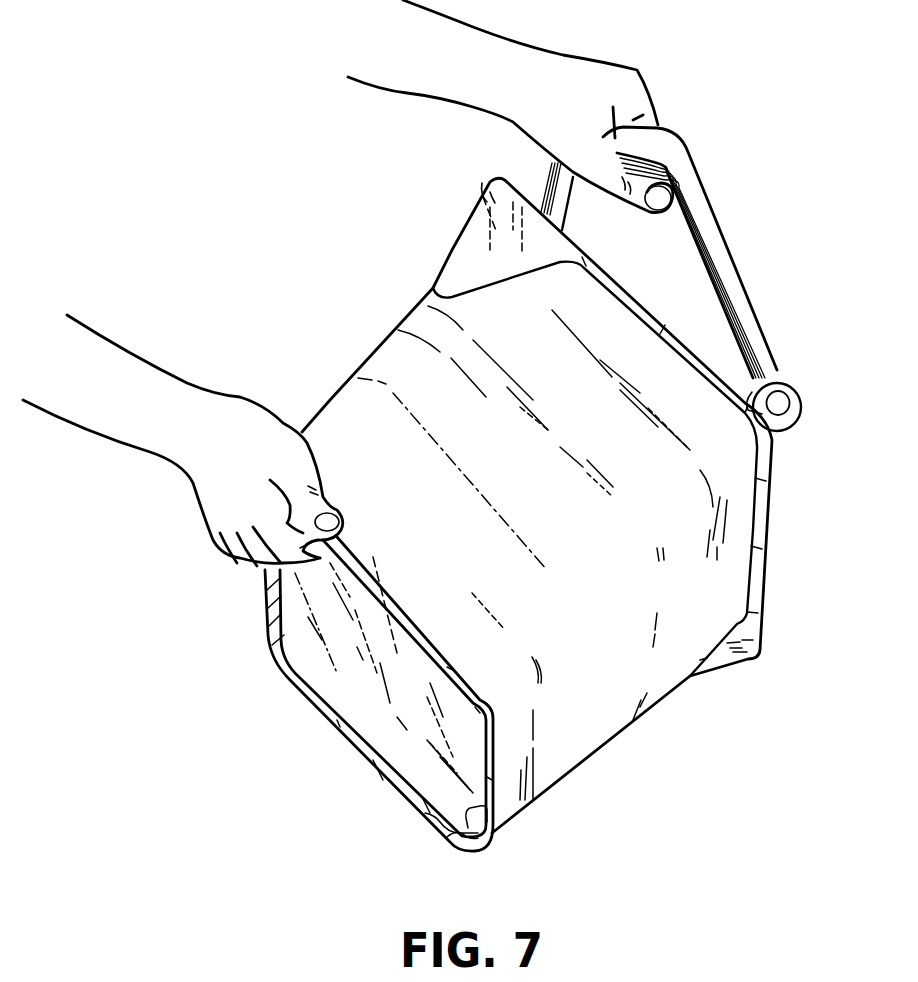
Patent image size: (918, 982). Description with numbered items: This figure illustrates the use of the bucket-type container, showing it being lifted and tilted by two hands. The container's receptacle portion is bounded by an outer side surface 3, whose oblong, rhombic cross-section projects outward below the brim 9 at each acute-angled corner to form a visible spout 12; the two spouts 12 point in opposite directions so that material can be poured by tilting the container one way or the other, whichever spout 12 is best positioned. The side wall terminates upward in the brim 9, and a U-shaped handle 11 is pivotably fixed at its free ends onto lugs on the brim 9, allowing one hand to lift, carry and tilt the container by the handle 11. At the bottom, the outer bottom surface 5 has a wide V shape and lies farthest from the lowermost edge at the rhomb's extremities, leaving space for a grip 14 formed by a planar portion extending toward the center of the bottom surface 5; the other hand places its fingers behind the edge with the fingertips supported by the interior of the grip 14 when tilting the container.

The outer side surface 3 is at (590, 723).
The outer bottom surface 5 is at (397, 727).
The brim 9 is at (775, 488).
The U-shaped handle 11 is at (700, 200).
The spout 12 is at (487, 182).
The grip 14 is at (452, 848).